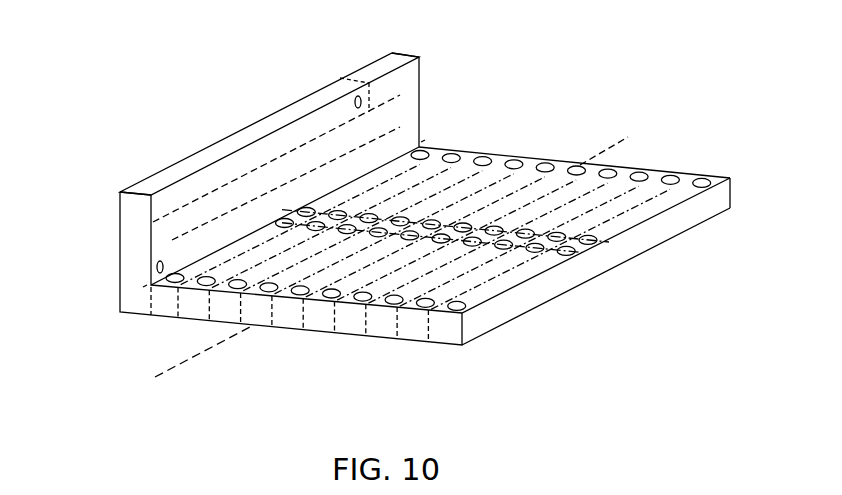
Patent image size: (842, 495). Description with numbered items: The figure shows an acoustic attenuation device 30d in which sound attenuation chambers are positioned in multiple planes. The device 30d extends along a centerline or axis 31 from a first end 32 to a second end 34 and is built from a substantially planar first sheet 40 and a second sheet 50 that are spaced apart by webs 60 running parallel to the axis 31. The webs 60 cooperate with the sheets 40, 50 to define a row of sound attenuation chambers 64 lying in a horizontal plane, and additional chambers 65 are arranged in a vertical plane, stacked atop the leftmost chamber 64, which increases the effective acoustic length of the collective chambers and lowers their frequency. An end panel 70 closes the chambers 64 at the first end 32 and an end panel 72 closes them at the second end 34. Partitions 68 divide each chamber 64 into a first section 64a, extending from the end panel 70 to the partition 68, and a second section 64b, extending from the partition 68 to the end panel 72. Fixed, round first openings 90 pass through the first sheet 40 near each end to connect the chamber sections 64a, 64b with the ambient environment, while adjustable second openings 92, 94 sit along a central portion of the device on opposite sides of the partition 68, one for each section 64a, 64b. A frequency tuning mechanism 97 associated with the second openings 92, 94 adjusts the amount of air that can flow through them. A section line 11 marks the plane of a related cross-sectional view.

The section line 11 is at (143, 287).
The device 30d is at (632, 152).
The axis 31 is at (594, 150).
The first end 32 is at (142, 357).
The second end 34 is at (507, 143).
The first sheet 40 is at (268, 123).
The second sheet 50 is at (538, 312).
The web 60 is at (120, 200).
The sound attenuation chamber 64 is at (415, 332).
The first chamber section 64a is at (348, 322).
The second chamber section 64b is at (585, 208).
The chamber 65 is at (228, 177).
The partition 68 is at (340, 78).
The end panel 70 is at (120, 237).
The end panel 72 is at (420, 80).
The first opening 90 is at (168, 284).
The second opening 92 is at (547, 257).
The second opening 94 is at (573, 242).
The frequency tuning mechanism 97 is at (481, 265).